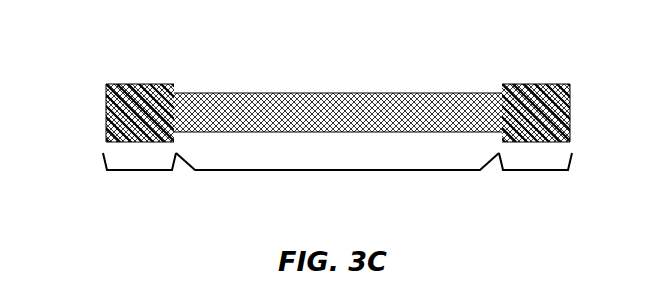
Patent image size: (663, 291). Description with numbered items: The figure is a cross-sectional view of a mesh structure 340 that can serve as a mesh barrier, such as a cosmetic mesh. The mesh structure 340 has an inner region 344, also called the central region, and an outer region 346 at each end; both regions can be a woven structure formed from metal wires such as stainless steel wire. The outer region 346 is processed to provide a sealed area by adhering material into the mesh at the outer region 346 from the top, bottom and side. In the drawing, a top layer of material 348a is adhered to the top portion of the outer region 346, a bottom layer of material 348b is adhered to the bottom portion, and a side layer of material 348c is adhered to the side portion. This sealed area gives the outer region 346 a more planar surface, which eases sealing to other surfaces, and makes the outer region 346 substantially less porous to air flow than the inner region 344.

The mesh structure 340 is at (438, 60).
The inner region 344 is at (337, 172).
The outer region 346 is at (148, 175).
The top layer of material 348a is at (150, 84).
The bottom layer of material 348b is at (103, 153).
The side layer of material 348c is at (106, 108).